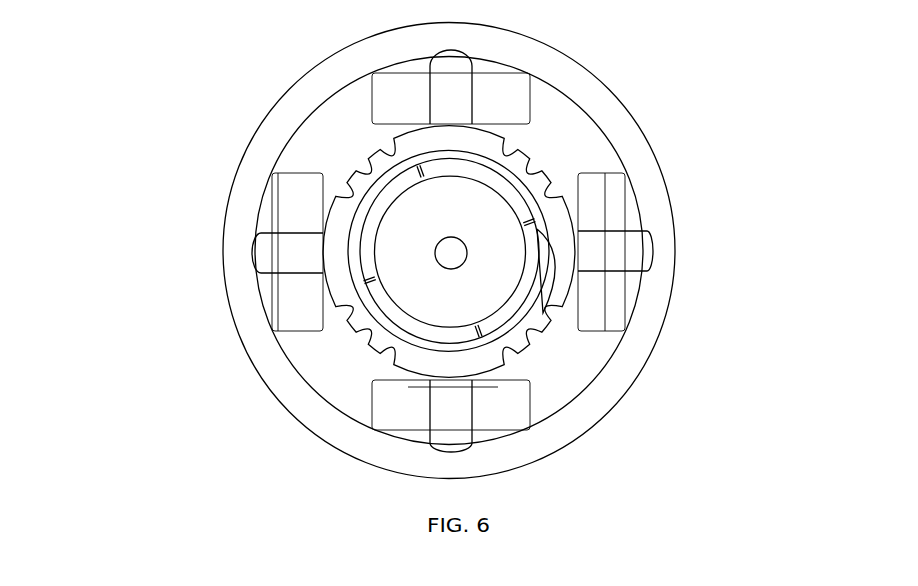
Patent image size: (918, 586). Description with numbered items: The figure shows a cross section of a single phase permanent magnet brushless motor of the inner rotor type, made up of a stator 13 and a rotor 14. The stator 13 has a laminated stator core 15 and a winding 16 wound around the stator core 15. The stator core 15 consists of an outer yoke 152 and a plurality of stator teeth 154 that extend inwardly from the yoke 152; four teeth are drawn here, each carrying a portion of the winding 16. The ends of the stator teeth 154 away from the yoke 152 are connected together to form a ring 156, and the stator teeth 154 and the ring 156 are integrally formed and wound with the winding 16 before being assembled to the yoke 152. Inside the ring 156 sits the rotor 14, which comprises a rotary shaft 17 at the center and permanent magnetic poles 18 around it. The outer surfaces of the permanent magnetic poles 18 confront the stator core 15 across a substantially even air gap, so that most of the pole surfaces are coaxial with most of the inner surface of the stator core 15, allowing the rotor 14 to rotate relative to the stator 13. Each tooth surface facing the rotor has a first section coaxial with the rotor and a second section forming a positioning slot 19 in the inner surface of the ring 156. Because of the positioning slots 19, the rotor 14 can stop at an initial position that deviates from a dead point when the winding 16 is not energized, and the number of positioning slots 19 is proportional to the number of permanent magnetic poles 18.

The stator 13 is at (101, 277).
The rotor 14 is at (126, 160).
The laminated stator core 15 is at (300, 390).
The winding 16 is at (307, 322).
The rotary shaft 17 is at (451, 254).
The permanent magnetic poles 18 is at (365, 248).
The positioning slot 19 is at (545, 311).
The yoke 152 is at (598, 95).
The stator teeth 154 is at (632, 247).
The ring 156 is at (560, 218).